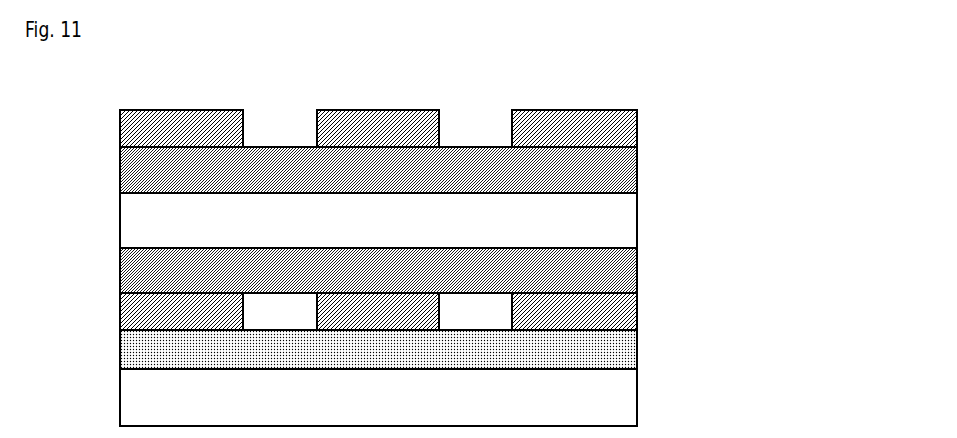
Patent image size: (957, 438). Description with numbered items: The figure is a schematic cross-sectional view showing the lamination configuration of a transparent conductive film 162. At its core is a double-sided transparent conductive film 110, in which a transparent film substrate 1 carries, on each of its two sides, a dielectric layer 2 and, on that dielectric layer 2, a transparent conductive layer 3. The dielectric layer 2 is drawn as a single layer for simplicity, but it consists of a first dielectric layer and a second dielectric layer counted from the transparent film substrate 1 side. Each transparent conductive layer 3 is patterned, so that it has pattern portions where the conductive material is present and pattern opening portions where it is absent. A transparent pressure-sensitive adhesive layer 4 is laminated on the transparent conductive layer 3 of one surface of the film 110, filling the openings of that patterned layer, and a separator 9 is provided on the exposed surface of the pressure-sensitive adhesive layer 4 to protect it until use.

The transparent conductive film 162 is at (459, 227).
The transparent conductive film 110 is at (459, 222).
The transparent conductive layer 3 is at (627, 125).
The dielectric layer 2 is at (625, 167).
The transparent film substrate 1 is at (622, 213).
The pressure-sensitive adhesive layer 4 is at (622, 346).
The separator 9 is at (622, 388).